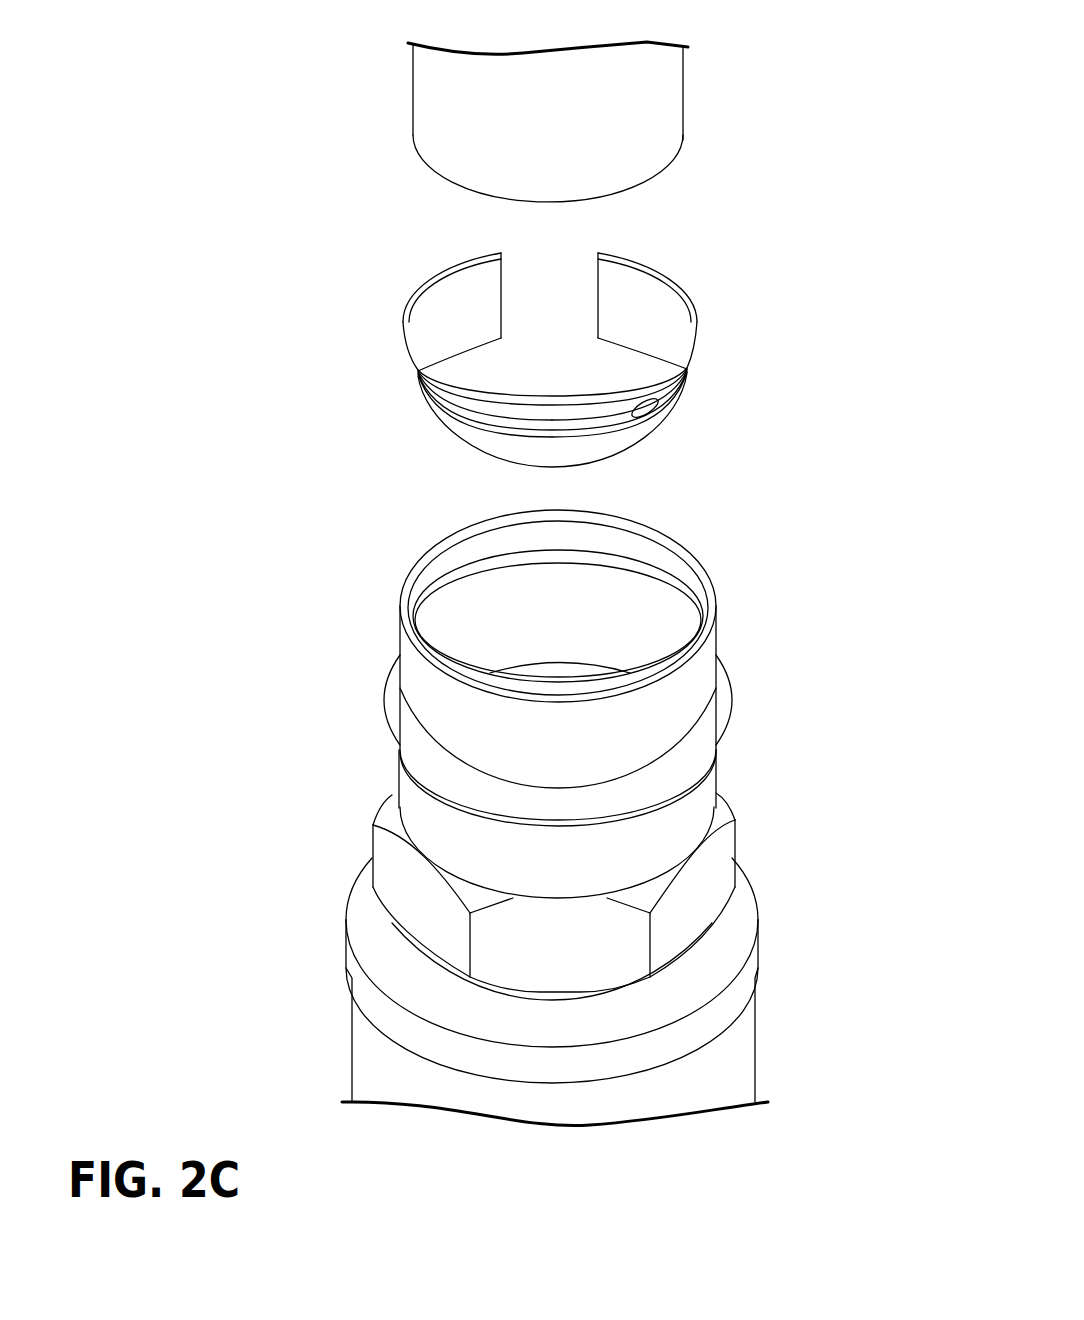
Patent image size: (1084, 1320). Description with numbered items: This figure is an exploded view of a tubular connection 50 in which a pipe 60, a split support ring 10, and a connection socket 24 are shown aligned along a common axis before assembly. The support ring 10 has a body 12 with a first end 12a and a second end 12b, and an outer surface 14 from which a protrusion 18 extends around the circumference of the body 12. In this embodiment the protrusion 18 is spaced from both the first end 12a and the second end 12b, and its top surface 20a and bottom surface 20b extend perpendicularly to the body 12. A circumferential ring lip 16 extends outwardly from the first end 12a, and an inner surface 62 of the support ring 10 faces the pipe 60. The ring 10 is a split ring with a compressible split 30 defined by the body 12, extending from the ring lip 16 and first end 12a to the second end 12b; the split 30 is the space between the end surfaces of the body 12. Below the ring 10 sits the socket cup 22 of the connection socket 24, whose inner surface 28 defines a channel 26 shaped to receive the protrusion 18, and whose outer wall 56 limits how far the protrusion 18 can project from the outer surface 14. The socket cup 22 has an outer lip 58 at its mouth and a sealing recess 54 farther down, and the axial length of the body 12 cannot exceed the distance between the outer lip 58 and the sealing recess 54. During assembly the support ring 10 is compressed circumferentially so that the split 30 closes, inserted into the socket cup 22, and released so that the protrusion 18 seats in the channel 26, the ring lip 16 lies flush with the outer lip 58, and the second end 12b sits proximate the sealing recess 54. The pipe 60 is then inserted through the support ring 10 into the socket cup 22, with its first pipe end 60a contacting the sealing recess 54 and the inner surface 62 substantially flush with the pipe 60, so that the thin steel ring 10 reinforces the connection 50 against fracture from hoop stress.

The support ring 10 is at (567, 357).
The body 12 is at (426, 393).
The first end 12a is at (416, 371).
The second end 12b is at (432, 430).
The outer surface 14 is at (483, 441).
The ring lip 16 is at (673, 291).
The protrusion 18 is at (657, 412).
The top surface 20a is at (658, 400).
The bottom surface 20b is at (636, 430).
The socket cup 22 is at (570, 668).
The connection socket 24 is at (382, 777).
The channel 26 is at (677, 598).
The inner surface 28 is at (638, 555).
The compressible split 30 is at (560, 275).
The tubular connection 50 is at (812, 918).
The sealing recess 54 is at (705, 740).
The outer wall 56 is at (692, 690).
The outer lip 58 is at (703, 632).
The pipe 60 is at (559, 123).
The first pipe end 60a is at (458, 184).
The inner surface 62 is at (452, 325).